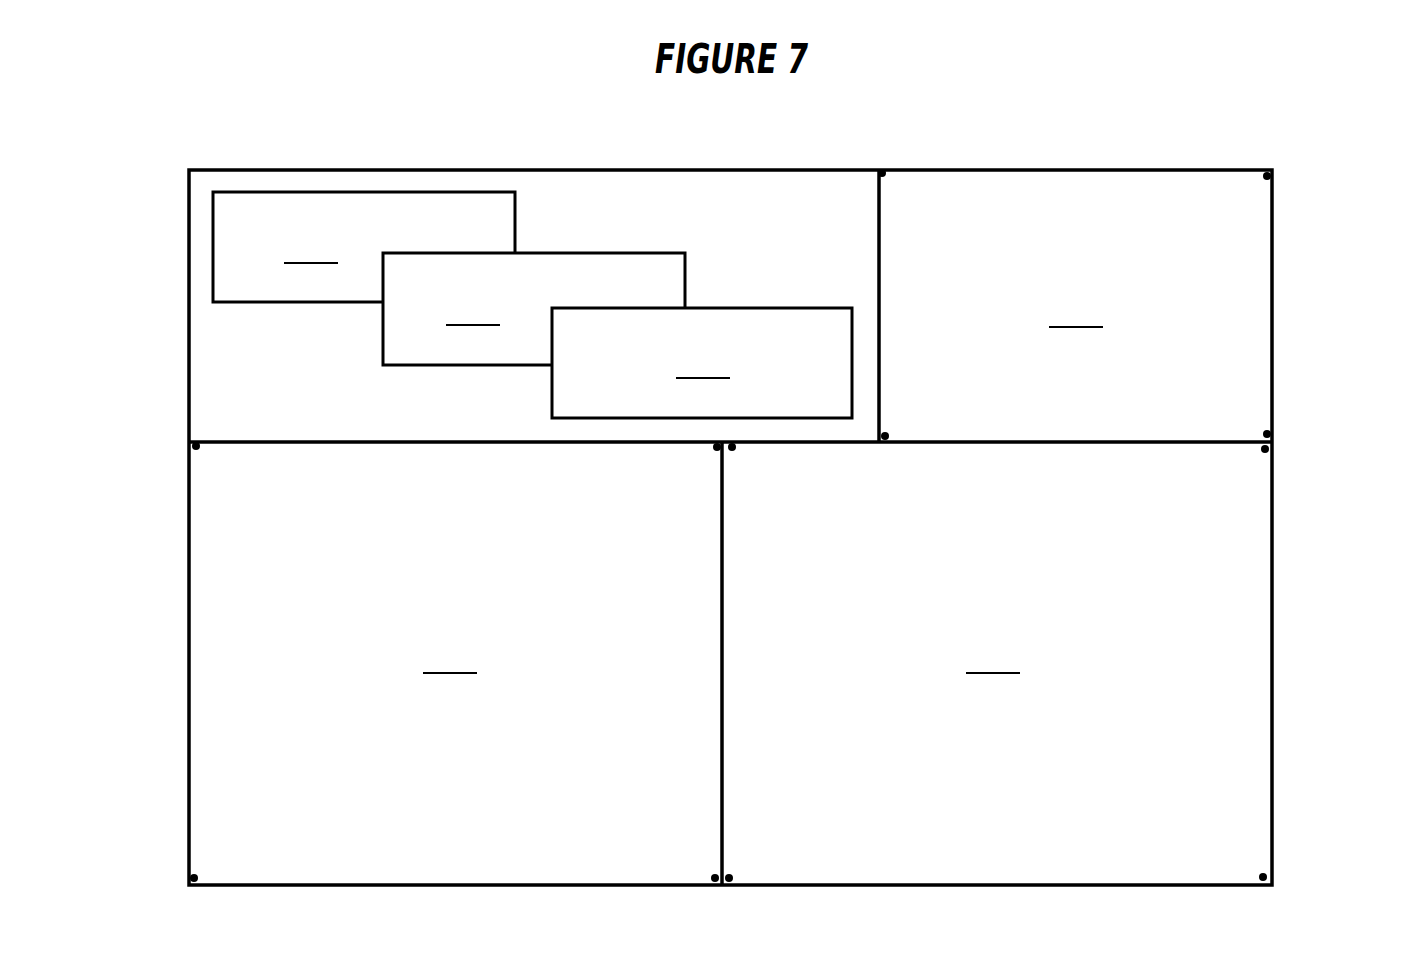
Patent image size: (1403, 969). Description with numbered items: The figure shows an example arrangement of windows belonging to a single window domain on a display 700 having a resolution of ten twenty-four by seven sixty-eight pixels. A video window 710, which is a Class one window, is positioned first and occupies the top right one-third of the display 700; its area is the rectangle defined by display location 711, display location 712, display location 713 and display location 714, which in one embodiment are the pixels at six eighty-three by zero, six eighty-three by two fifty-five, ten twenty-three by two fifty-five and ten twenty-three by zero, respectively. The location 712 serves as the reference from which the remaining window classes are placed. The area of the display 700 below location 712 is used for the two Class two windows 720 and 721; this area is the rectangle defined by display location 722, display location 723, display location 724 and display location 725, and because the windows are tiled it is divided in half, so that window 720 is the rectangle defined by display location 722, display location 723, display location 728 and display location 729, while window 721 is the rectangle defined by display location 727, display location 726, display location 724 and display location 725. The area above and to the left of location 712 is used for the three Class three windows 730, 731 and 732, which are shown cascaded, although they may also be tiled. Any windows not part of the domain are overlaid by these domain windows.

The display 700 is at (629, 168).
The video window 710 is at (991, 306).
The display location 711 is at (890, 168).
The display location 712 is at (888, 448).
The display location 713 is at (1276, 436).
The display location 714 is at (1276, 174).
The Class 2 window 720 is at (572, 663).
The Class 2 window 721 is at (993, 657).
The display location 722 is at (187, 446).
The display location 723 is at (187, 875).
The display location 724 is at (1260, 875).
The display location 725 is at (1263, 452).
The display location 726 is at (733, 876).
The display location 727 is at (734, 452).
The display location 728 is at (712, 876).
The display location 729 is at (716, 452).
The Class 3 window 730 is at (364, 247).
The Class 3 window 731 is at (534, 309).
The Class 3 window 732 is at (702, 363).